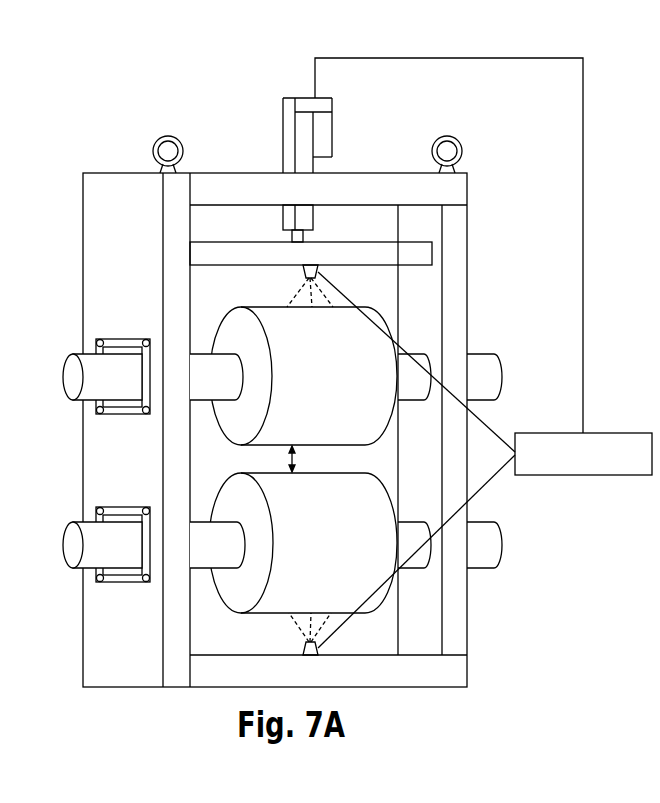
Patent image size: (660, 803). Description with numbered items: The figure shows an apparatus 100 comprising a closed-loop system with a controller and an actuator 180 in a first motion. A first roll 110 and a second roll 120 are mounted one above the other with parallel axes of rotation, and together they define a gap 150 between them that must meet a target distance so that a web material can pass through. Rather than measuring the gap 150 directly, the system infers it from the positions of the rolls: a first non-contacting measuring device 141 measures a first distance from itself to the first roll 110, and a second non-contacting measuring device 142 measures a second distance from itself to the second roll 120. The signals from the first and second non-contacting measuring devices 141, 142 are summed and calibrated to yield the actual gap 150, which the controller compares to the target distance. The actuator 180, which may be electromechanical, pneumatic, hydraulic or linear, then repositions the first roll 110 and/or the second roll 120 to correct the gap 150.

The apparatus 100 is at (130, 100).
The actuator 180 is at (286, 146).
The first non-contacting measuring device 141 is at (318, 270).
The first roll 110 is at (360, 342).
The gap 150 is at (296, 462).
The second roll 120 is at (365, 583).
The second non-contacting measuring device 142 is at (318, 649).